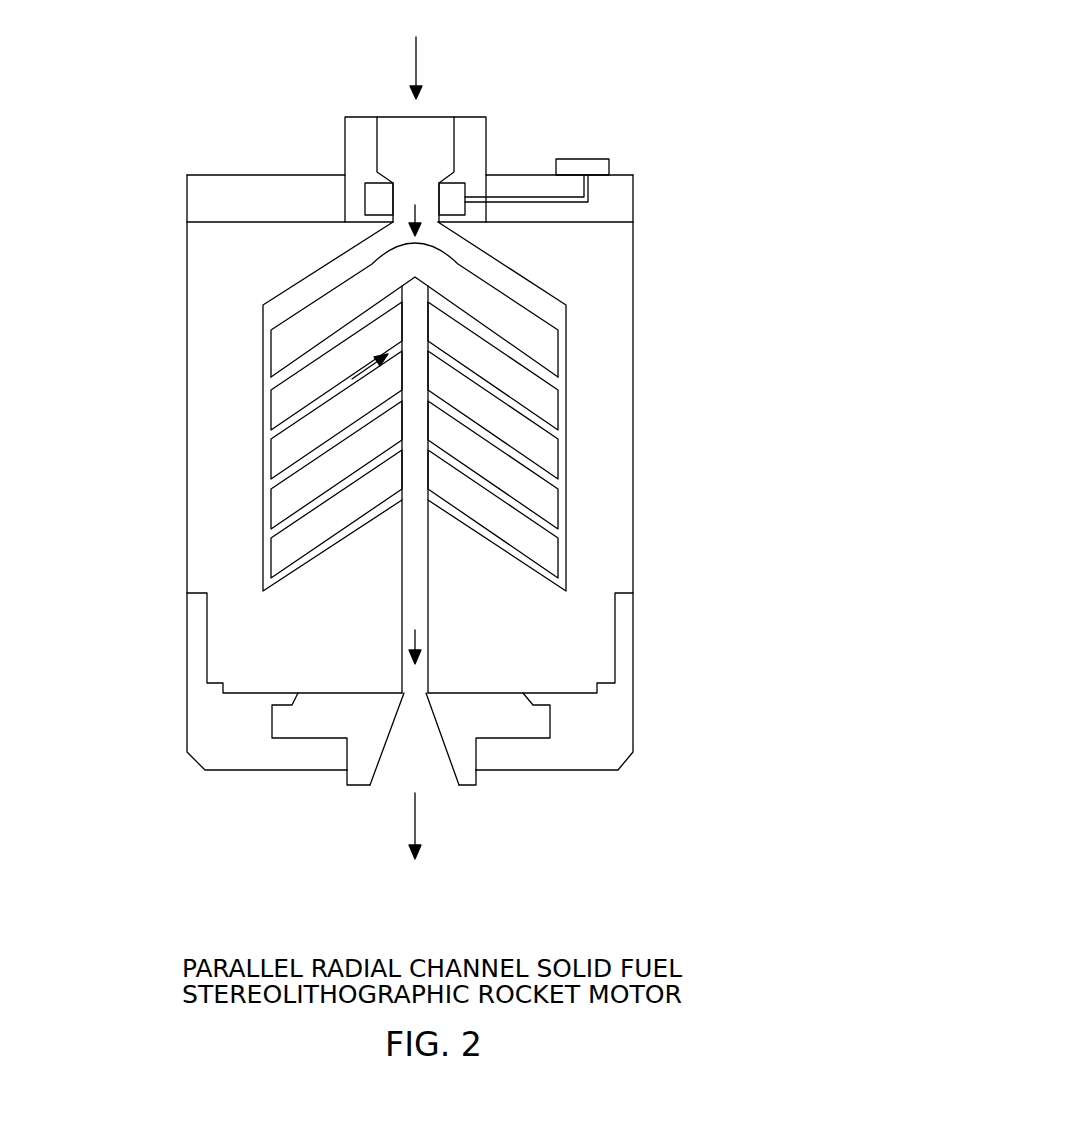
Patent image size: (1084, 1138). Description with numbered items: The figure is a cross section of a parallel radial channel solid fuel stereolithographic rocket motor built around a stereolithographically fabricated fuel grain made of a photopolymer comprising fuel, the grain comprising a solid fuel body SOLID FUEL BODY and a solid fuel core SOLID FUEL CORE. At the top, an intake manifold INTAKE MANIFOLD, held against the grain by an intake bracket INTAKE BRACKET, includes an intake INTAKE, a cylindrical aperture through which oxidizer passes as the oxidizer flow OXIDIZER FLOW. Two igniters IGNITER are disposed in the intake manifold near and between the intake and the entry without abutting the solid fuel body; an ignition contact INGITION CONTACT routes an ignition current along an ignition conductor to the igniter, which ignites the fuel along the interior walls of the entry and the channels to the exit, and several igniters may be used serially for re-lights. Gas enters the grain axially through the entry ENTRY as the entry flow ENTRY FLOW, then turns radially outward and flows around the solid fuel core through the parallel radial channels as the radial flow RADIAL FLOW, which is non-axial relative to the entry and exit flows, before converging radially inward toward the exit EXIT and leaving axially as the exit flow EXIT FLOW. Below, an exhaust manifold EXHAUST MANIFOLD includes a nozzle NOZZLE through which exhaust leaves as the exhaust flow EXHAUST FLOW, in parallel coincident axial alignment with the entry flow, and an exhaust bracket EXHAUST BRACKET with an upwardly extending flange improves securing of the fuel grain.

The oxidizer flow OXIDIZER FLOW is at (417, 57).
The intake INTAKE is at (433, 117).
The intake manifold INTAKE MANIFOLD is at (345, 137).
The igniter IGNITER is at (467, 188).
The ignition contact INGITION CONTACT is at (610, 170).
The intake bracket INTAKE BRACKET is at (197, 223).
The solid fuel body SOLID FUEL BODY is at (633, 297).
The entry ENTRY is at (483, 245).
The entry flow ENTRY FLOW is at (413, 218).
The solid fuel core SOLID FUEL CORE is at (414, 310).
The radial flow RADIAL FLOW is at (300, 423).
The exit EXIT is at (402, 570).
The exit flow EXIT FLOW is at (410, 645).
The exhaust bracket EXHAUST BRACKET is at (633, 677).
The exhaust manifold EXHAUST MANIFOLD is at (362, 786).
The nozzle NOZZLE is at (432, 787).
The exhaust flow EXHAUST FLOW is at (419, 855).